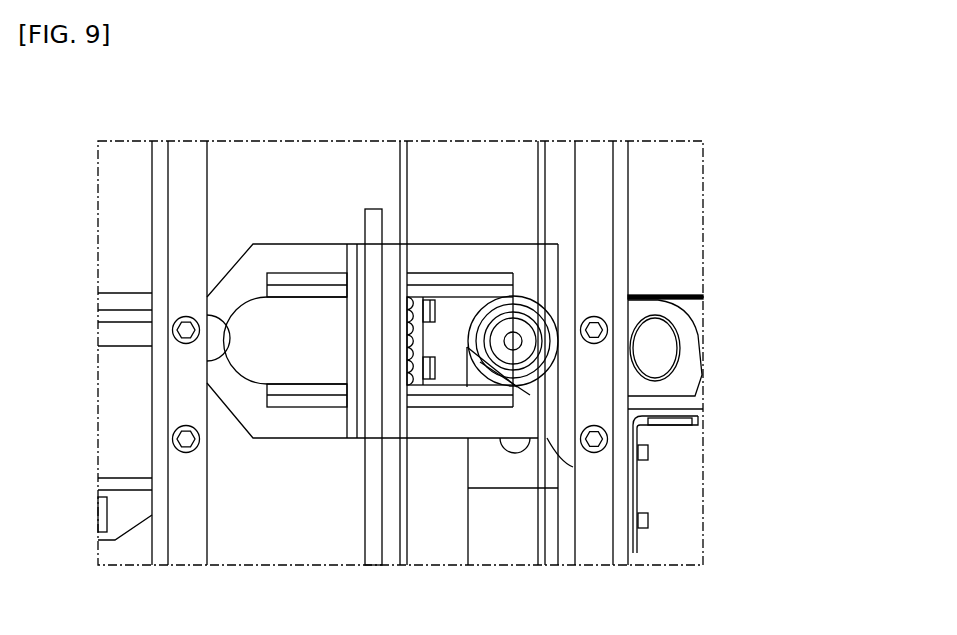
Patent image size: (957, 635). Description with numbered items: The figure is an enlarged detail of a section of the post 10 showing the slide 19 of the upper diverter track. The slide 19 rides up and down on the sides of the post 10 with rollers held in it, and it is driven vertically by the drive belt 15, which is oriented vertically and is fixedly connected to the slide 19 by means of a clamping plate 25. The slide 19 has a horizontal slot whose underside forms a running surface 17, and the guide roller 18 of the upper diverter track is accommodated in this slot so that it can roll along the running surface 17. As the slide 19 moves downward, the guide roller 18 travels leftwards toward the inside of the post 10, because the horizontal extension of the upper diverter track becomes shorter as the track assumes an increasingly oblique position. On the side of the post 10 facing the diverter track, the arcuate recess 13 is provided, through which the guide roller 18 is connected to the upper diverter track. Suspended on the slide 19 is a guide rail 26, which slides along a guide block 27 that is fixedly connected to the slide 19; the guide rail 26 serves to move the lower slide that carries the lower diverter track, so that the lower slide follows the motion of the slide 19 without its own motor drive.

The post 10 is at (622, 565).
The arcuate recess 13 is at (497, 532).
The drive belt 15 is at (545, 173).
The running surface 17 is at (297, 387).
The guide roller 18 is at (513, 327).
The slide 19 is at (463, 263).
The clamping plate 25 is at (415, 318).
The guide rail 26 is at (375, 227).
The guide block 27 is at (352, 348).